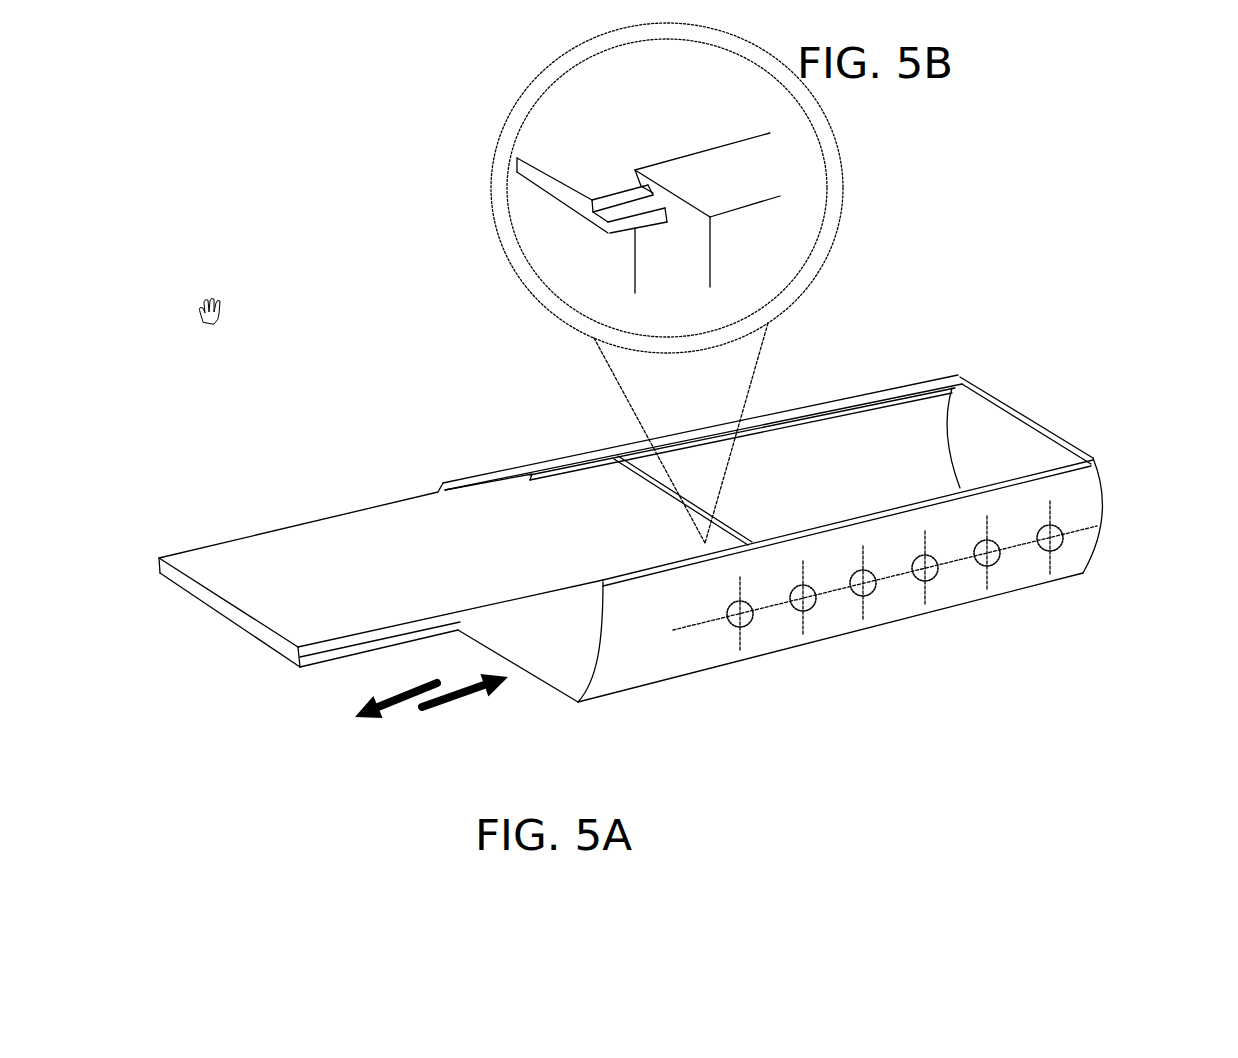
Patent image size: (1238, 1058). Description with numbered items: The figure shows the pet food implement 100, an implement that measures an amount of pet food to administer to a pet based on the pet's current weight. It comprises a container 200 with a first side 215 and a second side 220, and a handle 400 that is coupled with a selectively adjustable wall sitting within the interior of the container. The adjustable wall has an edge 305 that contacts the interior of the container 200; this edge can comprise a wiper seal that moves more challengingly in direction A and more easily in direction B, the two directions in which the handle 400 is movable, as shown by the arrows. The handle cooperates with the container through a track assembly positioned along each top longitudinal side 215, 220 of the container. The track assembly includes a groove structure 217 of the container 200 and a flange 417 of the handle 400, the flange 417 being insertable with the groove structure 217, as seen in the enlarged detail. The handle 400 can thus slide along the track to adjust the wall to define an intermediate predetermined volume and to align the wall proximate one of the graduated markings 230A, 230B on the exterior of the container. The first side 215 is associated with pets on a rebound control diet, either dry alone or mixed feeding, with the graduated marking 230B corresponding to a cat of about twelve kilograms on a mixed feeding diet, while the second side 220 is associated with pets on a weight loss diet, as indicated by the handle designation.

In FIG. 5A, the pet food implement 100 is at (195, 257).
In FIG. 5A, the container 200 is at (1005, 413).
In FIG. 5A, the first side 215 is at (1093, 460).
In FIG. 5B, the groove structure 217 is at (635, 168).
In FIG. 5A, the second side 220 is at (848, 402).
In FIG. 5A, the graduated marking 230A is at (860, 607).
In FIG. 5A, the graduated marking 230B is at (873, 540).
In FIG. 5A, the edge 305 is at (647, 490).
In FIG. 5A, the handle 400 is at (212, 607).
In FIG. 5B, the flange 417 is at (607, 231).